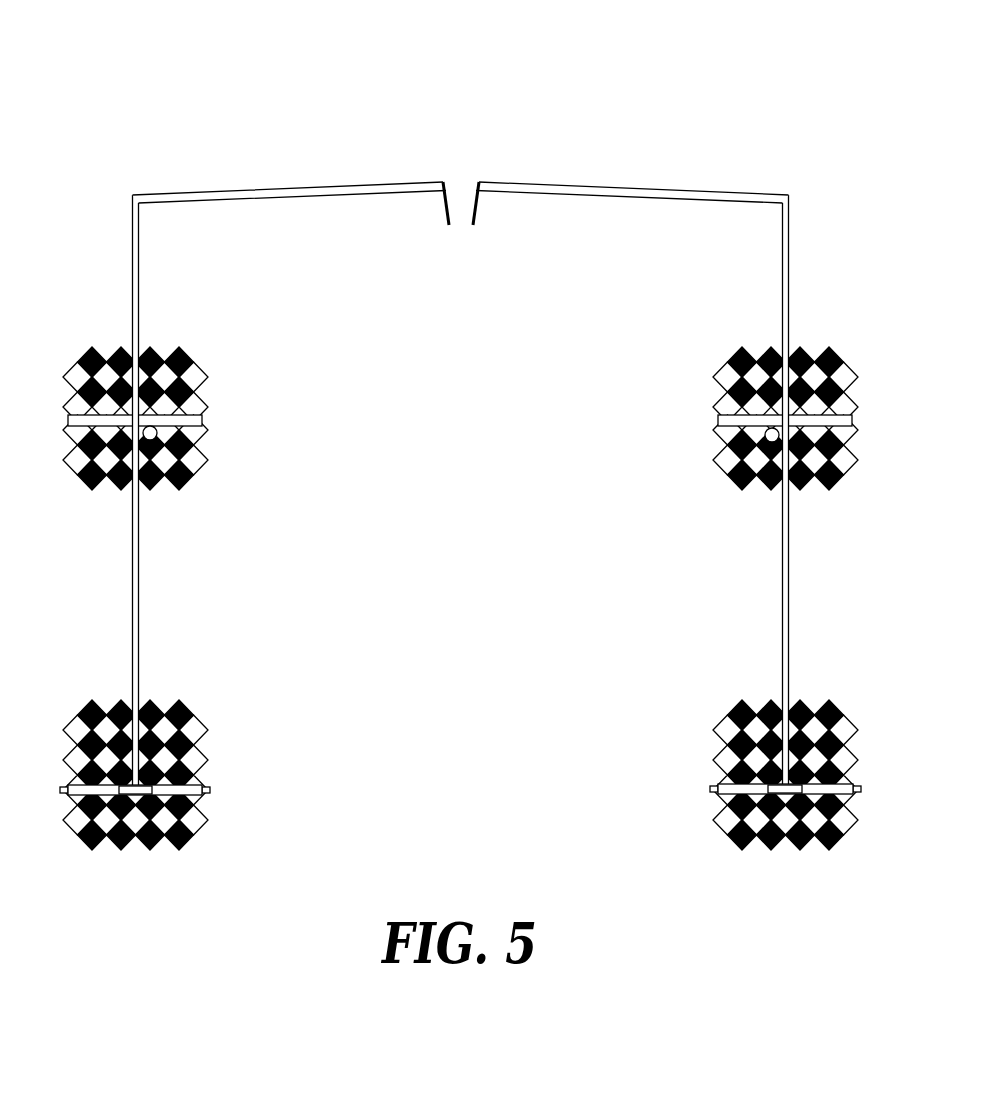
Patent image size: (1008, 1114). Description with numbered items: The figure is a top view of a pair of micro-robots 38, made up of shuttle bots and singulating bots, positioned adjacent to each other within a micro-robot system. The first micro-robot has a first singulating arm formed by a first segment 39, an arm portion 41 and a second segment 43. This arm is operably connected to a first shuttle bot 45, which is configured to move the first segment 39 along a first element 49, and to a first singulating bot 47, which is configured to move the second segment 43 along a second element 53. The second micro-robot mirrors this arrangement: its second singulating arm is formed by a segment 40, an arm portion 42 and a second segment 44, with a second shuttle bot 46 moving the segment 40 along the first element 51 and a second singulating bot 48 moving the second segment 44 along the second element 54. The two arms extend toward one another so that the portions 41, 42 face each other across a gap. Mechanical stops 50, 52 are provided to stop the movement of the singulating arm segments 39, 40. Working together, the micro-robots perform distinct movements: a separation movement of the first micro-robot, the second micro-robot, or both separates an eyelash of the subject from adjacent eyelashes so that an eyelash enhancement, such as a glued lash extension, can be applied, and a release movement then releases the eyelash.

The pair of micro-robots 38 is at (139, 76).
The first segment of the first singulating arm 39 is at (288, 189).
The second segment of the second singulating arm 40 is at (634, 189).
The first singulating arm portion 41 is at (445, 213).
The second singulating arm portion 42 is at (476, 215).
The second segment of the first singulating arm 43 is at (131, 526).
The second segment of the second singulating arm 44 is at (790, 527).
The first shuttle bot 45 is at (70, 392).
The second shuttle bot 46 is at (851, 393).
The first singulating bot 47 is at (84, 735).
The second singulating bot 48 is at (842, 818).
The first element 49 is at (202, 419).
The mechanical stop 50 is at (156, 438).
The first element 51 is at (713, 418).
The mechanical stop 52 is at (766, 439).
The second element 53 is at (202, 781).
The second element 54 is at (718, 782).